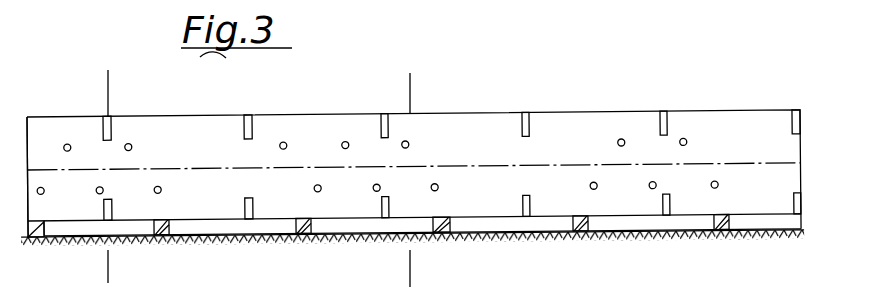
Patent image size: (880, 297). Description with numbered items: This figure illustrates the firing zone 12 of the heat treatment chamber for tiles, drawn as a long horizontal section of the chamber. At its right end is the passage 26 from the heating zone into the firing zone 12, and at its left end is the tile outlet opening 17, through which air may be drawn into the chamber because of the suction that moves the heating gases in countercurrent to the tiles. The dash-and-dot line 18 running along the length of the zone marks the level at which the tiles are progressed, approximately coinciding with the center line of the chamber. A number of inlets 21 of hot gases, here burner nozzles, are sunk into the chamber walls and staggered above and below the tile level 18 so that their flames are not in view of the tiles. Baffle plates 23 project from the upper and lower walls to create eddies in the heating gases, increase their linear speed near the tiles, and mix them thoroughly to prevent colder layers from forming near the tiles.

The firing zone 12 is at (462, 102).
The tile outlet opening 17 is at (30, 122).
The dash-and-dot line 18 is at (557, 165).
The inlets of hot inlet gases 21 is at (129, 144).
The baffle plates 23 is at (253, 128).
The passage from the heating to the firing zone 26 is at (799, 108).